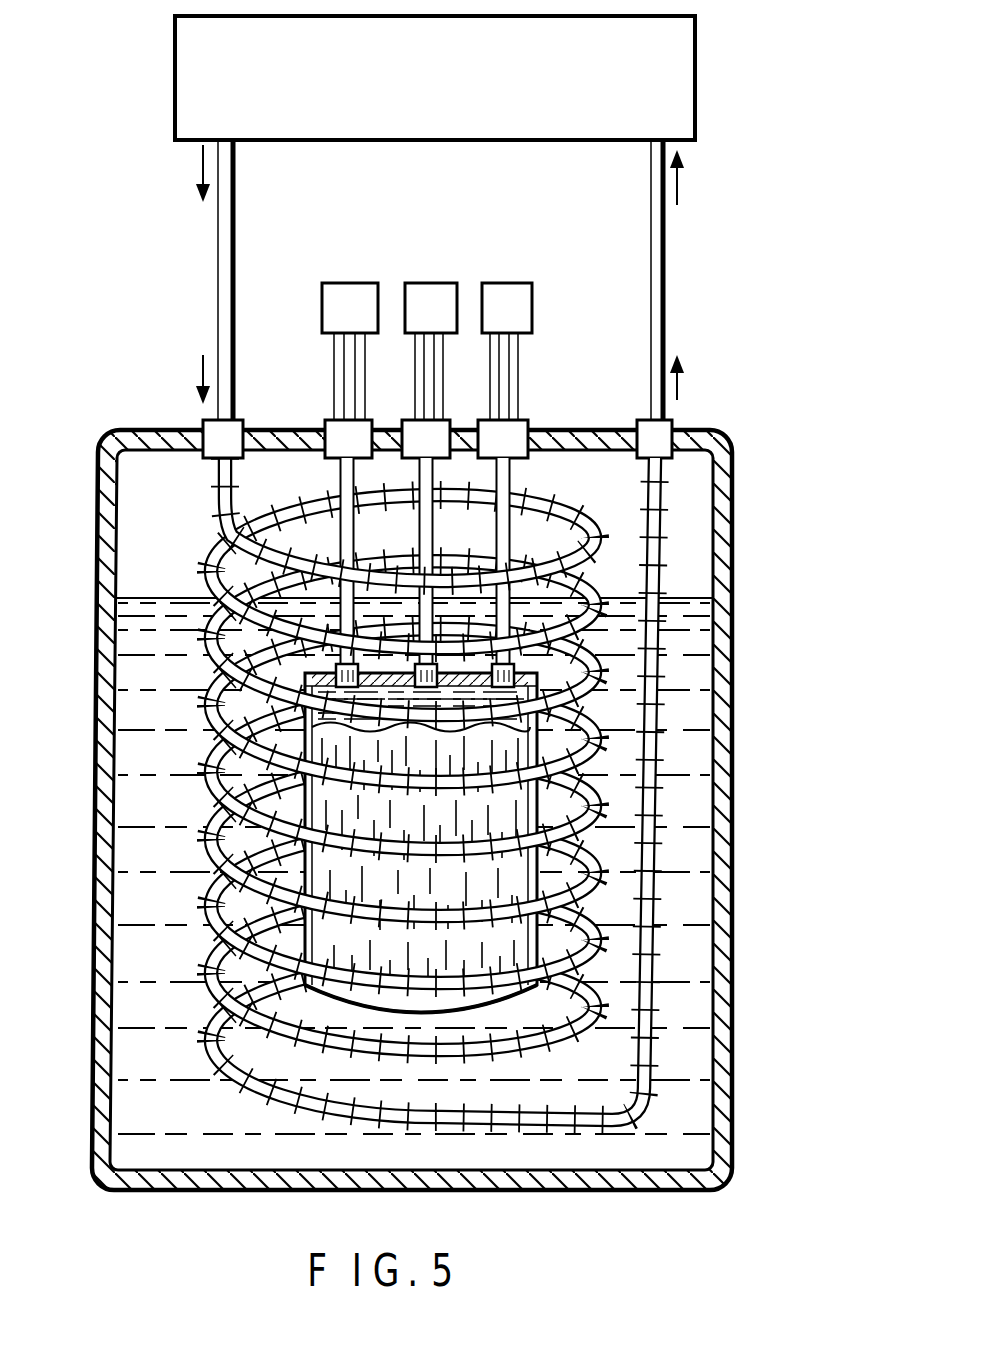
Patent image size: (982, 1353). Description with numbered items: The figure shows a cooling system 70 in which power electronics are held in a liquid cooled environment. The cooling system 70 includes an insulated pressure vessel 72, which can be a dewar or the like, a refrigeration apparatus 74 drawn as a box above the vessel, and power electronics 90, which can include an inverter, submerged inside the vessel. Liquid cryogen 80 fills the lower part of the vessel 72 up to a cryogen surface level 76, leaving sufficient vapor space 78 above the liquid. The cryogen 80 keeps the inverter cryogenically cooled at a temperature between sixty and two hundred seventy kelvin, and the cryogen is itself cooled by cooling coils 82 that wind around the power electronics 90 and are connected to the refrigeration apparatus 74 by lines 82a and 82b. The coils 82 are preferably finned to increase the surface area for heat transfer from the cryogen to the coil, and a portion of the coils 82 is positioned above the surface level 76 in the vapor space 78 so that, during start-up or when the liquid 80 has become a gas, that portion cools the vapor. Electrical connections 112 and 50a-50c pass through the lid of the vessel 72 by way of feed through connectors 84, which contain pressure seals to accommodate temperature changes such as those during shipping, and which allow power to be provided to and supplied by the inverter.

The cooling system 70 is at (829, 113).
The insulated pressure vessel 72 is at (733, 793).
The refrigeration apparatus 74 is at (176, 78).
The cryogen surface level 76 is at (160, 598).
The vapor space 78 is at (698, 566).
The liquid cryogen 80 is at (136, 801).
The cooling coils 82 is at (461, 726).
The line 82a is at (218, 270).
The line 82b is at (668, 262).
The feed through connectors 84 is at (334, 387).
The power electronics 90 is at (436, 822).
The connection 112 is at (345, 283).
The connections 50a-50c is at (507, 283).